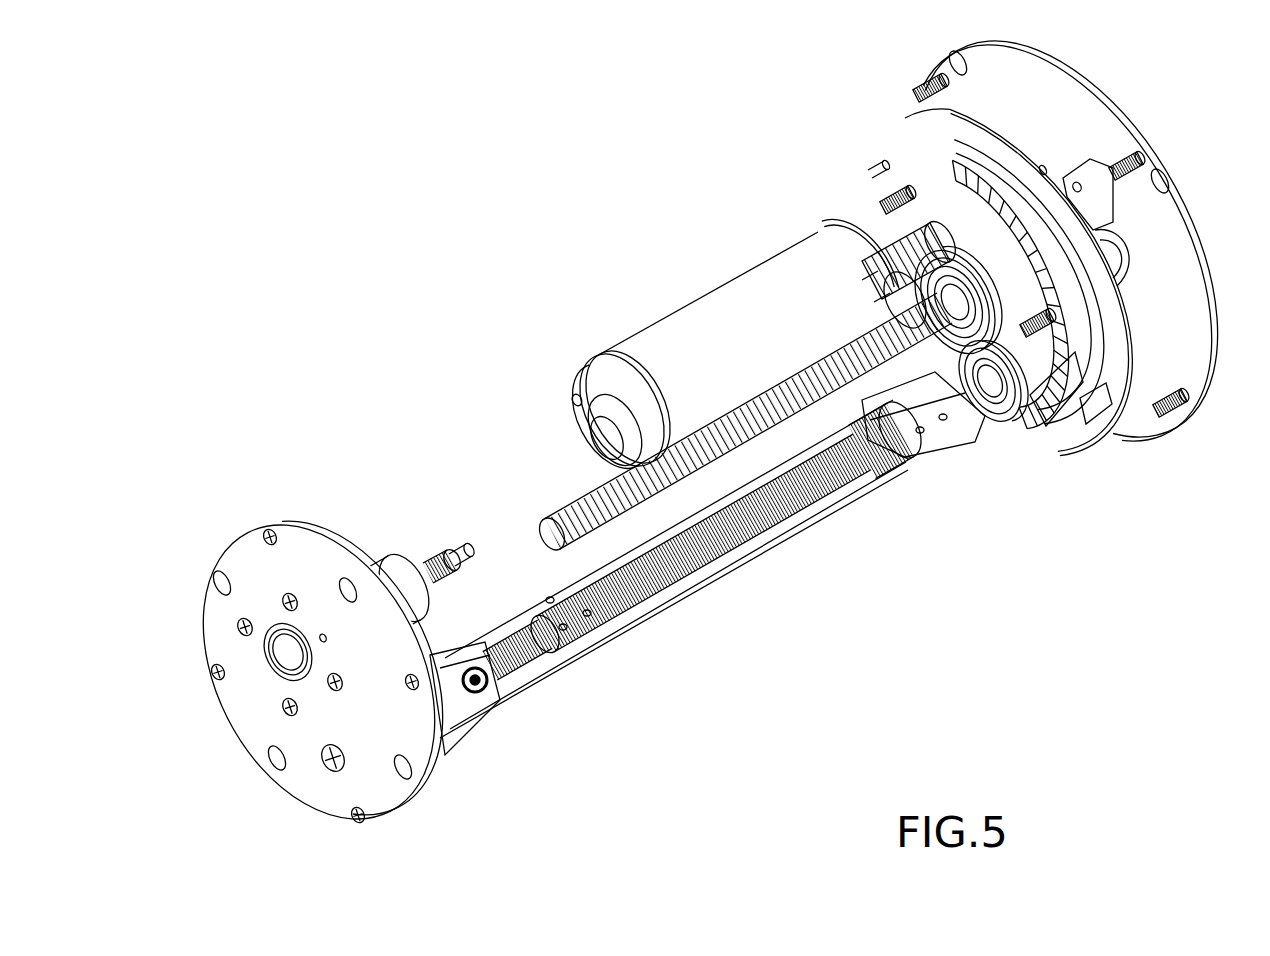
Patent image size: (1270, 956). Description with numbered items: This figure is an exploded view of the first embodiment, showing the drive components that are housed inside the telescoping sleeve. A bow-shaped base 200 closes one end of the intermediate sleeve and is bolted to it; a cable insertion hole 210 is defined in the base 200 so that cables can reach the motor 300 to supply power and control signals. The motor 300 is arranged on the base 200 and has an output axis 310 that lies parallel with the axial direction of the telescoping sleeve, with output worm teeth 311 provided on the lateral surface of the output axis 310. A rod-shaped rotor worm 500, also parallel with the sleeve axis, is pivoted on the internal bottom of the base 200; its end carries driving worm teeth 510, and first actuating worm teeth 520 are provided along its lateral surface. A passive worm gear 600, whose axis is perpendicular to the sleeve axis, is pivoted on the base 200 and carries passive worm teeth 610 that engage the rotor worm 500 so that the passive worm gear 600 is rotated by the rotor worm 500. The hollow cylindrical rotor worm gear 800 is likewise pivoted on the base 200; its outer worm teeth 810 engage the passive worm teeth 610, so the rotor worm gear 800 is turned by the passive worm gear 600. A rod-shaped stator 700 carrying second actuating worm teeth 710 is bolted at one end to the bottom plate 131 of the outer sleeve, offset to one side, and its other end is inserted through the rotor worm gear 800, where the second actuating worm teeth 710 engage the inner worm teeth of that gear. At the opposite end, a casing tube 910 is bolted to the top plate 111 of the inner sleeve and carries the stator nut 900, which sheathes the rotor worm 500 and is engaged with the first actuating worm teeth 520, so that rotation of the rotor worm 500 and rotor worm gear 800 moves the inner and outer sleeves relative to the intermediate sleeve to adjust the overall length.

The top plate 111 is at (258, 720).
The bottom plate 131 is at (1119, 111).
The base 200 is at (937, 167).
The cable insertion hole 210 is at (870, 168).
The motor 300 is at (722, 302).
The output axis 310 is at (885, 250).
The output worm teeth 311 is at (875, 211).
The rotor worm 500 is at (838, 514).
The driving worm teeth 510 is at (990, 428).
The first actuating worm teeth 520 is at (710, 578).
The passive worm gear 600 is at (1053, 410).
The passive worm teeth 610 is at (1068, 392).
The stator 700 is at (704, 423).
The second actuating worm teeth 710 is at (575, 518).
The rotor worm gear 800 is at (908, 203).
The outer worm teeth 810 is at (905, 181).
The stator nut 900 is at (937, 487).
The casing tube 910 is at (772, 552).